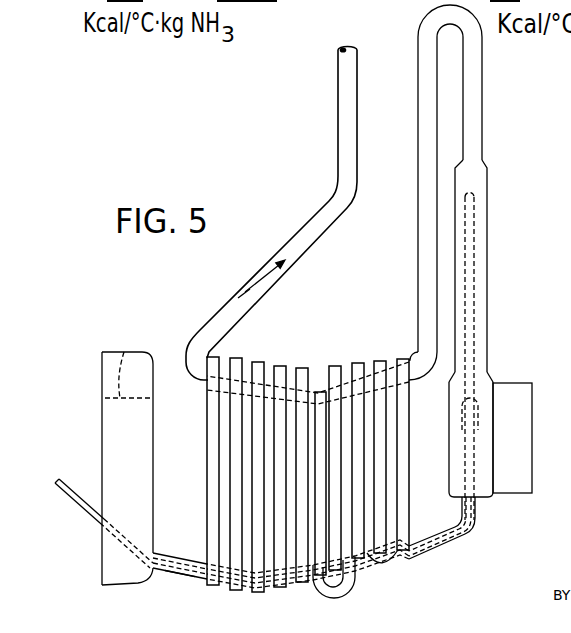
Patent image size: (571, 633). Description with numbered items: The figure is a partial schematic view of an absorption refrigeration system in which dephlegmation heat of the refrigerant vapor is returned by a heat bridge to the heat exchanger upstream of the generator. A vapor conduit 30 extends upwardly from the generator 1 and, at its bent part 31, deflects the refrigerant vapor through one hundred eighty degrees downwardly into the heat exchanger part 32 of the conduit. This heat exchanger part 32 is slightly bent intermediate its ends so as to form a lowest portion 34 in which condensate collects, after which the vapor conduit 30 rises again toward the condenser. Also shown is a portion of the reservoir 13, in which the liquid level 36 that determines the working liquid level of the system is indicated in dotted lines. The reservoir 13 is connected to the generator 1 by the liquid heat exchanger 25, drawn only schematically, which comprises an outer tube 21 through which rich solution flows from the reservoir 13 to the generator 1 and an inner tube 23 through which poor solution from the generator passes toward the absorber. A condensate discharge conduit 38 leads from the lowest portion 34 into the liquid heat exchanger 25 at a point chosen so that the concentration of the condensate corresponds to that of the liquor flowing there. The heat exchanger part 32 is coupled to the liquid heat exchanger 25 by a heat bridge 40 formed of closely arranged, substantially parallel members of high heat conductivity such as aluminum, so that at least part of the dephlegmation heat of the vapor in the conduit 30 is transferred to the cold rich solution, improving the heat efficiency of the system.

The generator 1 is at (488, 351).
The reservoir 13 is at (123, 570).
The outer tube 21 is at (171, 553).
The inner tube 23 is at (67, 500).
The liquid heat exchanger 25 is at (181, 576).
The vapor conduit 30 is at (473, 146).
The bent part 31 is at (451, 14).
The heat exchanger part 32 is at (366, 375).
The lowest portion 34 is at (318, 392).
The liquid level 36 is at (123, 352).
The condensate discharge conduit 38 is at (320, 590).
The heat bridge 40 is at (395, 553).